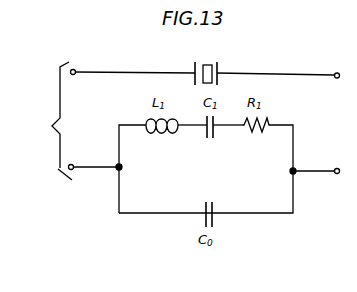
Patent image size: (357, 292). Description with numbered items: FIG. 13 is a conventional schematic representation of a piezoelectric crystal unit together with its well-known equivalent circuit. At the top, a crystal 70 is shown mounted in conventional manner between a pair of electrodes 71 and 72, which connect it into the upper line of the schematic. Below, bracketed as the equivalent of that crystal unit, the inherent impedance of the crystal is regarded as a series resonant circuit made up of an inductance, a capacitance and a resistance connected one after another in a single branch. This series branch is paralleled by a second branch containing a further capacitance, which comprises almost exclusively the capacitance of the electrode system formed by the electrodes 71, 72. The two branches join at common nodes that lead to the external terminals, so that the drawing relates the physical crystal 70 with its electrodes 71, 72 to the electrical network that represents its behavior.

The crystal 70 is at (210, 63).
The electrode 71 is at (193, 70).
The electrode 72 is at (220, 68).